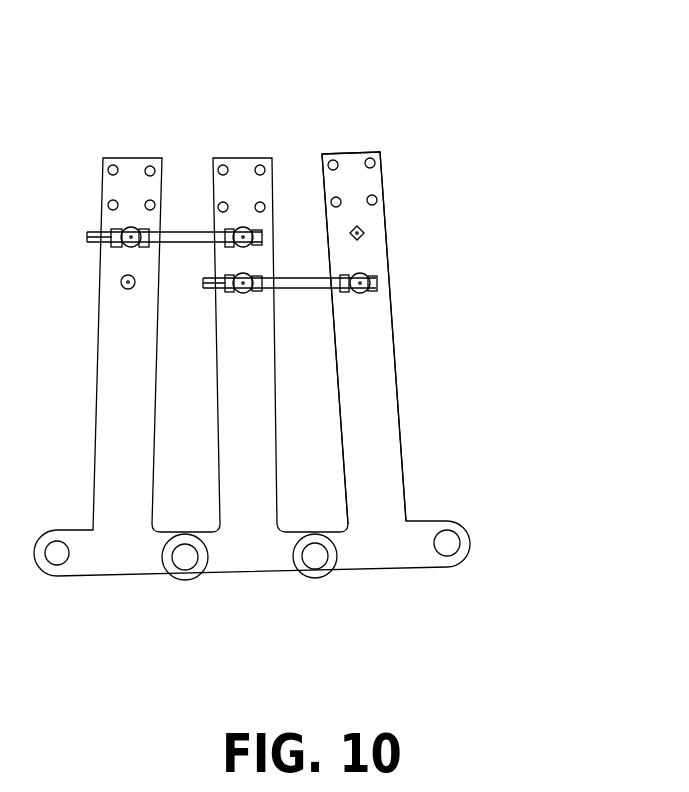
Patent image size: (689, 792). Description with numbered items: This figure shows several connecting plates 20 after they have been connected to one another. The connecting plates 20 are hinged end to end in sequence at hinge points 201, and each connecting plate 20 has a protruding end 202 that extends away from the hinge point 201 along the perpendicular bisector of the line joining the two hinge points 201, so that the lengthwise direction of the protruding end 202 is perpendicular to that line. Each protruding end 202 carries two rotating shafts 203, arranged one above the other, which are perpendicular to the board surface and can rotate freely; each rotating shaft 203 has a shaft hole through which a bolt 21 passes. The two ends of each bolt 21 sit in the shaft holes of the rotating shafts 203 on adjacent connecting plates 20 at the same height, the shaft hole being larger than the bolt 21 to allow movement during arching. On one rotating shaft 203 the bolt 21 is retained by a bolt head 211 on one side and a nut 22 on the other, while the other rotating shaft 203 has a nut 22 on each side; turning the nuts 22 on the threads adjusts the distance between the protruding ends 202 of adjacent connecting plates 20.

The connecting plate 20 is at (373, 548).
The hinge point 201 is at (447, 543).
The protruding end 202 is at (373, 422).
The rotating shaft 203 is at (363, 229).
The bolt 21 is at (165, 232).
The bolt head 211 is at (262, 228).
The nut 22 is at (147, 228).